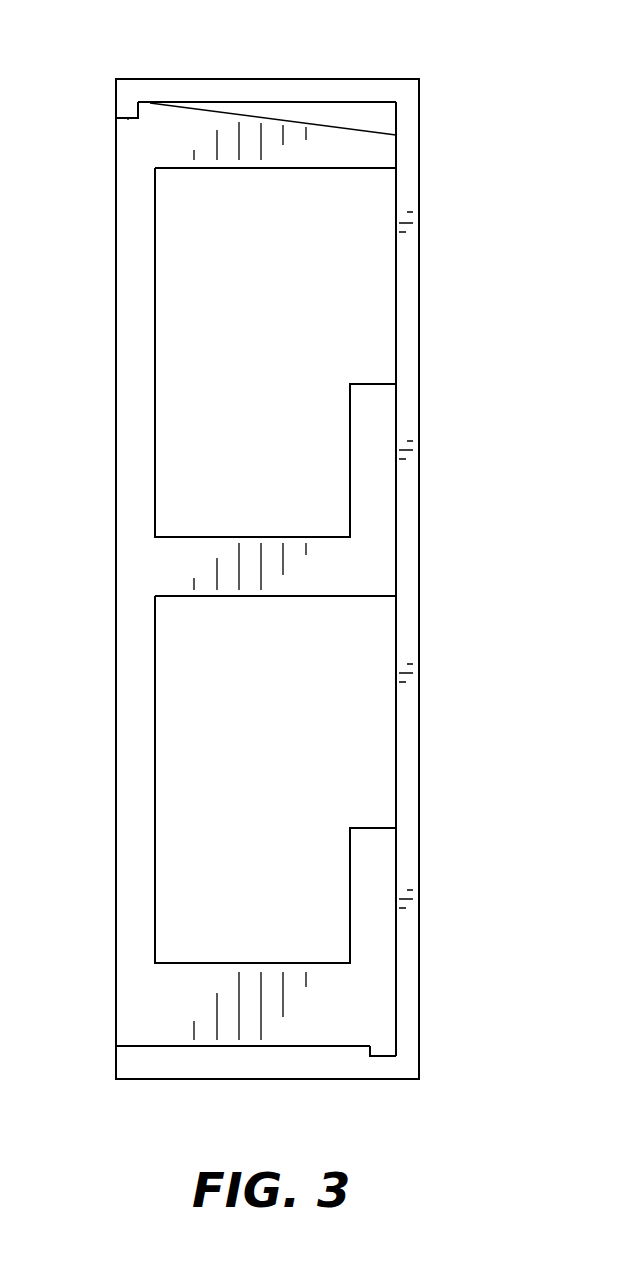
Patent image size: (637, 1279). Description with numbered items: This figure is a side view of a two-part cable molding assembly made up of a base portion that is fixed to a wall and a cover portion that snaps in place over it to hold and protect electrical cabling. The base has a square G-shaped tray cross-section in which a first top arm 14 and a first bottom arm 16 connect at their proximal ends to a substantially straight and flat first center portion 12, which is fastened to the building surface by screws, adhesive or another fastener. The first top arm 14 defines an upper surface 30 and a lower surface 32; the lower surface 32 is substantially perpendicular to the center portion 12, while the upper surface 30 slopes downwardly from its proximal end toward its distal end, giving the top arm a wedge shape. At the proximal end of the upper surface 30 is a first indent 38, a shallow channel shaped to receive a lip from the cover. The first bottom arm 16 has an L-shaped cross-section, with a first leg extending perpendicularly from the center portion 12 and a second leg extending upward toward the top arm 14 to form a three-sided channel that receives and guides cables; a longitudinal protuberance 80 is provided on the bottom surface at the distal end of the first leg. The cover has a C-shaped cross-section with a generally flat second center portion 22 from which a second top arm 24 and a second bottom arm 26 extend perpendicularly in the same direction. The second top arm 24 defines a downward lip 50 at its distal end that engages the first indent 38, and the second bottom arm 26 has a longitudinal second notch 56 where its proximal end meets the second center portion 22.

The first center portion 12 is at (126, 497).
The first top arm 14 is at (225, 150).
The first bottom arm 16 is at (255, 1030).
The second center portion 22 is at (410, 541).
The second top arm 24 is at (232, 90).
The second bottom arm 26 is at (170, 1068).
The upper surface 30 is at (297, 135).
The lower surface 32 is at (303, 170).
The first indent 38 is at (127, 120).
The lip 50 is at (131, 104).
The second notch 56 is at (387, 1057).
The longitudinal protuberance 80 is at (385, 1045).